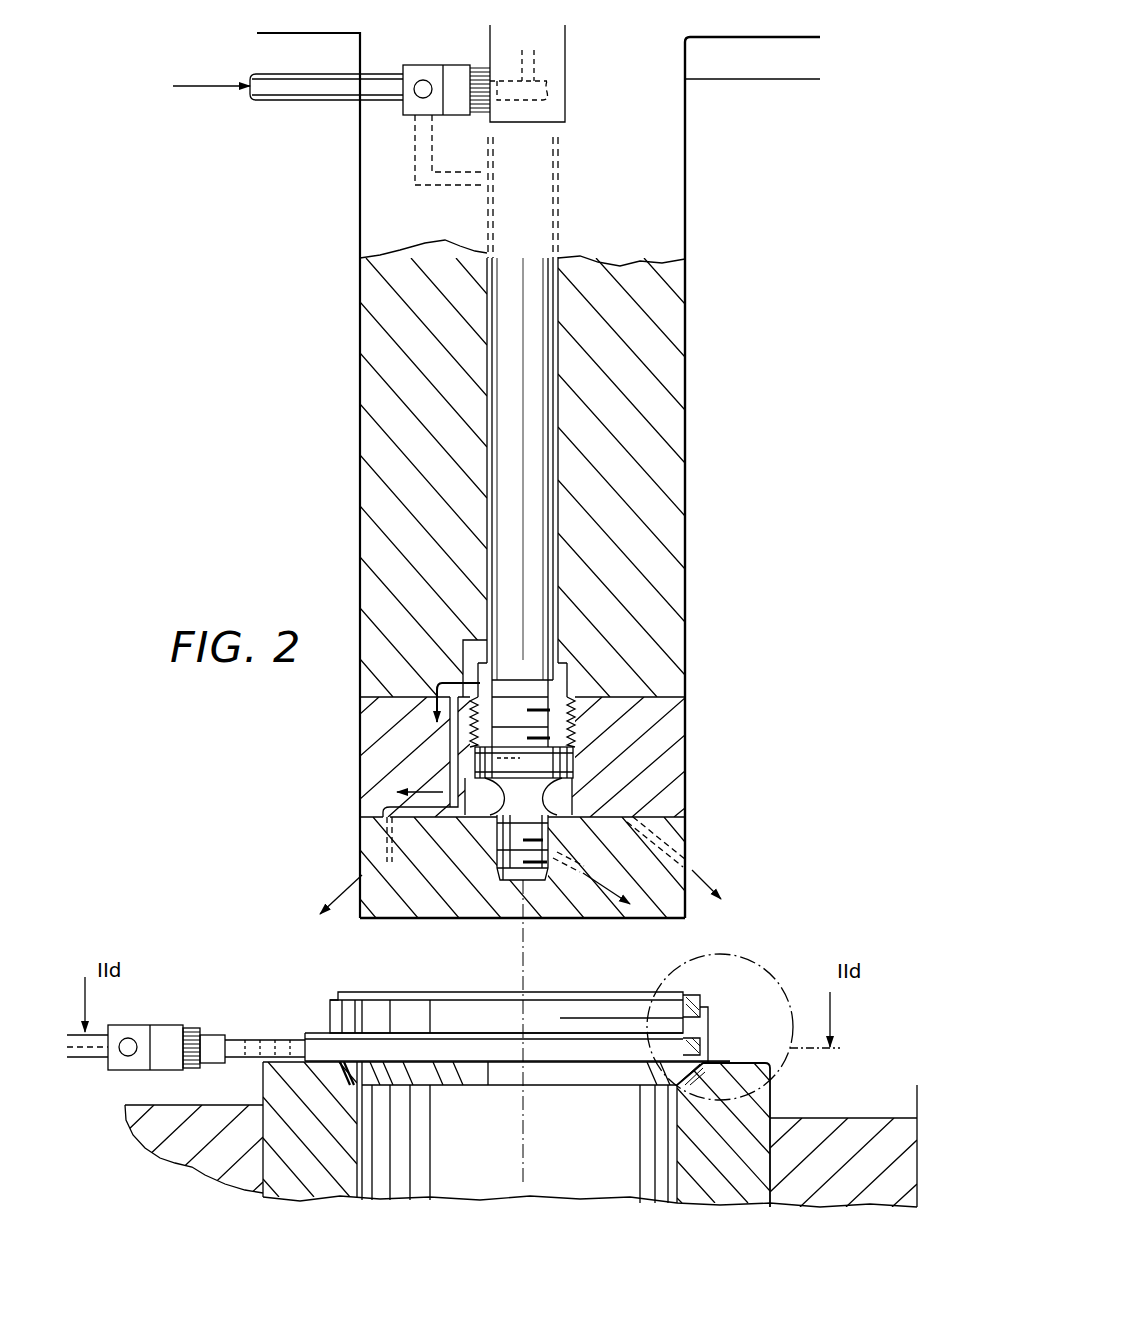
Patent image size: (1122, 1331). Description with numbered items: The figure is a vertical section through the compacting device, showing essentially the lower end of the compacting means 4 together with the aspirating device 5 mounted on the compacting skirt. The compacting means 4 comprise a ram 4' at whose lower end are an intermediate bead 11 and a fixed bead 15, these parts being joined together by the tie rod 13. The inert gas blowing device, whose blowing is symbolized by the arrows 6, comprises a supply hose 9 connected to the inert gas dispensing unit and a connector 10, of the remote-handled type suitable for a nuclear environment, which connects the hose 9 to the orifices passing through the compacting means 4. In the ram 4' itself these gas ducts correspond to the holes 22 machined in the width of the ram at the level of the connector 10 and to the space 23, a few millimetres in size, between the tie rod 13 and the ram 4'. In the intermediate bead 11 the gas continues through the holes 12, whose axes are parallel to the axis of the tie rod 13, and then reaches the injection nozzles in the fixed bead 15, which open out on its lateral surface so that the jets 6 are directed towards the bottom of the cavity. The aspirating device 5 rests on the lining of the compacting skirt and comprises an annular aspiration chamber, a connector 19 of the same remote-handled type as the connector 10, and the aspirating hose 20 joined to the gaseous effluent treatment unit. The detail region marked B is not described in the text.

The compacting means 4 is at (752, 477).
The ram 4' is at (544, 468).
The aspirating device 5 is at (326, 1004).
The inert gas blowing device 6 is at (340, 893).
The supply hose 9 is at (308, 97).
The connector 10 is at (435, 72).
The intermediate bead 11 is at (675, 760).
The holes 12 is at (455, 763).
The tie rod 13 is at (537, 313).
The fixed bead 15 is at (365, 842).
The connector 19 is at (173, 1025).
The aspirating hose 20 is at (95, 1060).
The holes 22 is at (433, 200).
The space 23 is at (488, 390).
The detail region B is at (780, 984).